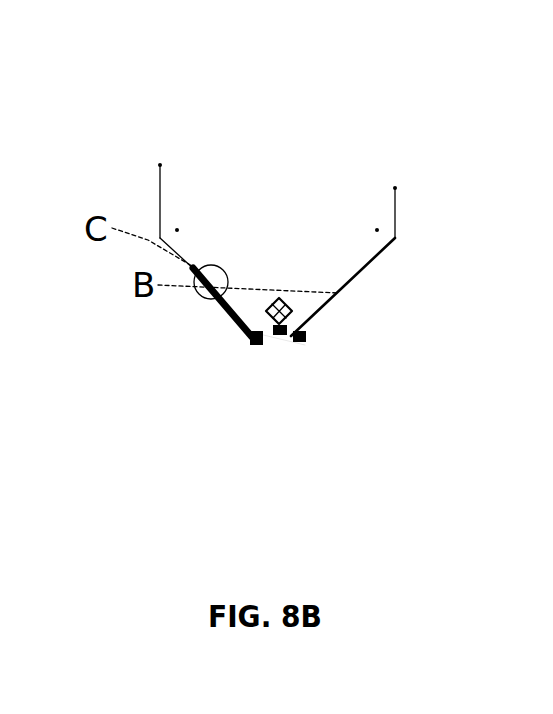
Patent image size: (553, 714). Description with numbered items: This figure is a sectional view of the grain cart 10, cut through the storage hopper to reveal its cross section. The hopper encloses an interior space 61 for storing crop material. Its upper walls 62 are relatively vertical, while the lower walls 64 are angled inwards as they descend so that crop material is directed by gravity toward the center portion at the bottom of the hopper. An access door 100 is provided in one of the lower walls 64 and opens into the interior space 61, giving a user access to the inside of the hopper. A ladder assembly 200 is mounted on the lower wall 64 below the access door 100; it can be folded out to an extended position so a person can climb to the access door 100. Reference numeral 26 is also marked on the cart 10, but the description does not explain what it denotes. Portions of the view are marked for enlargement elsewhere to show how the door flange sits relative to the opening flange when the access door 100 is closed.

The grain cart 10 is at (401, 110).
The first leg 26 is at (160, 198).
The interior space 61 is at (276, 180).
The upper walls 62 is at (395, 213).
The lower walls 64 is at (355, 275).
The access door 100 is at (222, 296).
The ladder assembly 200 is at (240, 310).